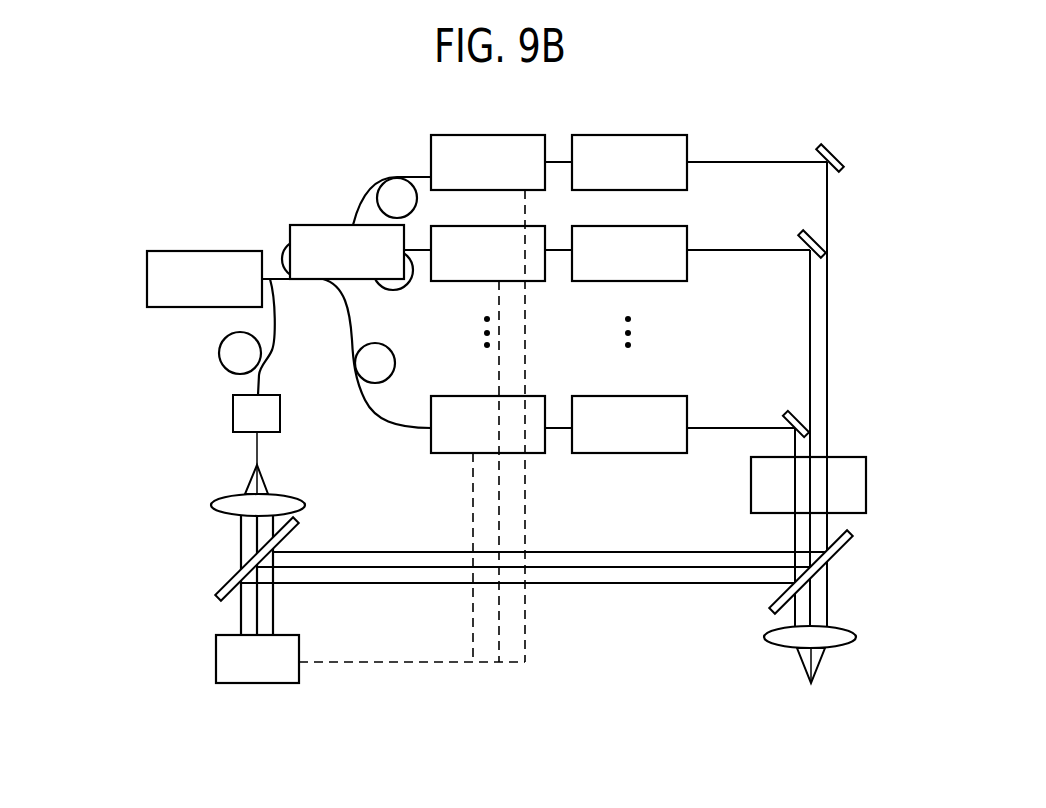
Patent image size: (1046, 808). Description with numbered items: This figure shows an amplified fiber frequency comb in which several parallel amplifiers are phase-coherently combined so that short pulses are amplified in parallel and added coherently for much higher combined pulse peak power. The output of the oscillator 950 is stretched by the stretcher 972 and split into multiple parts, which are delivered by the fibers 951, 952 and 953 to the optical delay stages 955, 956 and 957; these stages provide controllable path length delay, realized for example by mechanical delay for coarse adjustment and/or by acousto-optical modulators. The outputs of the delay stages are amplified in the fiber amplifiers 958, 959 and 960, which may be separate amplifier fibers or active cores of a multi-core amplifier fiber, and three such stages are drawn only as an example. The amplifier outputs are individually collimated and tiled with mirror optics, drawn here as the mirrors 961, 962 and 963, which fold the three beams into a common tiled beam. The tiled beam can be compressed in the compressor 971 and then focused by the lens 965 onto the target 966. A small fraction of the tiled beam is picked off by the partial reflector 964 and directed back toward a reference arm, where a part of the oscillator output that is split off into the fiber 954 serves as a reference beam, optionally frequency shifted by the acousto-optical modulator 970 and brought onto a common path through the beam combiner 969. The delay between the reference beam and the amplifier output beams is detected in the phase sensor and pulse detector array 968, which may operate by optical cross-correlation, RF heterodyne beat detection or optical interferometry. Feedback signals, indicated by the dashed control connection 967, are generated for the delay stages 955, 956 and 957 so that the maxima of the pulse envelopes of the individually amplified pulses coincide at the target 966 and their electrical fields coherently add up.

The oscillator 950 is at (203, 251).
The fiber 951 is at (392, 178).
The fiber 952 is at (413, 283).
The fiber 953 is at (394, 370).
The fiber 954 is at (220, 348).
The optical delay stage 955 is at (480, 135).
The optical delay stage 956 is at (480, 226).
The optical delay stage 957 is at (480, 396).
The fiber amplifier 958 is at (631, 135).
The fiber amplifier 959 is at (631, 226).
The fiber amplifier 960 is at (631, 396).
The mirror 961 is at (755, 162).
The mirror 962 is at (755, 250).
The mirror 963 is at (755, 428).
The partial reflector 964 is at (767, 618).
The lens 965 is at (765, 640).
The target 966 is at (808, 684).
The control signal line 967 is at (360, 662).
The phase sensor and pulse detector array 968 is at (215, 668).
The beam splitter 969 is at (222, 590).
The acousto-optical modulator 970 is at (233, 407).
The compressor 971 is at (751, 493).
The stretcher 972 is at (310, 225).